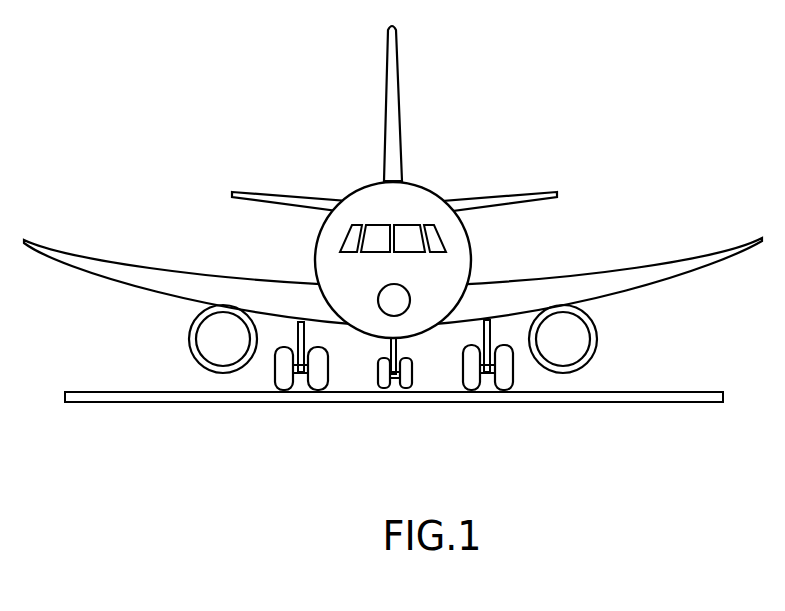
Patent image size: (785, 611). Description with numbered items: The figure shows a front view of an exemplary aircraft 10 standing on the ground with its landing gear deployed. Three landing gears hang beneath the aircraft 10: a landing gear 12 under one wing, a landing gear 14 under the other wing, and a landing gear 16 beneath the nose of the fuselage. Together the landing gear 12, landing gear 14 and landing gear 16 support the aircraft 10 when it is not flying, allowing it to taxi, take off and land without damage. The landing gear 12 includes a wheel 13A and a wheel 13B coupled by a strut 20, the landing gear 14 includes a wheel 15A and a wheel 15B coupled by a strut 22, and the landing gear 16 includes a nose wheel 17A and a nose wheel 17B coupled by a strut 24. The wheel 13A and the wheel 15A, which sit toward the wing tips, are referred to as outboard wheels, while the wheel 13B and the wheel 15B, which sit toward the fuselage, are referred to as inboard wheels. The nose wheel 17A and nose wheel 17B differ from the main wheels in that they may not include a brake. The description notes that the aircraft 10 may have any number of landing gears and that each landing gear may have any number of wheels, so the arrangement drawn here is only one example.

The aircraft 10 is at (248, 102).
The landing gear 12 is at (533, 380).
The wheel 13A is at (517, 384).
The wheel 13B is at (483, 343).
The landing gear 14 is at (252, 378).
The wheel 15A is at (275, 386).
The wheel 15B is at (333, 388).
The landing gear 16 is at (428, 350).
The nose wheel 17A is at (412, 380).
The nose wheel 17B is at (380, 387).
The strut 20 is at (486, 384).
The strut 22 is at (300, 382).
The strut 24 is at (394, 382).